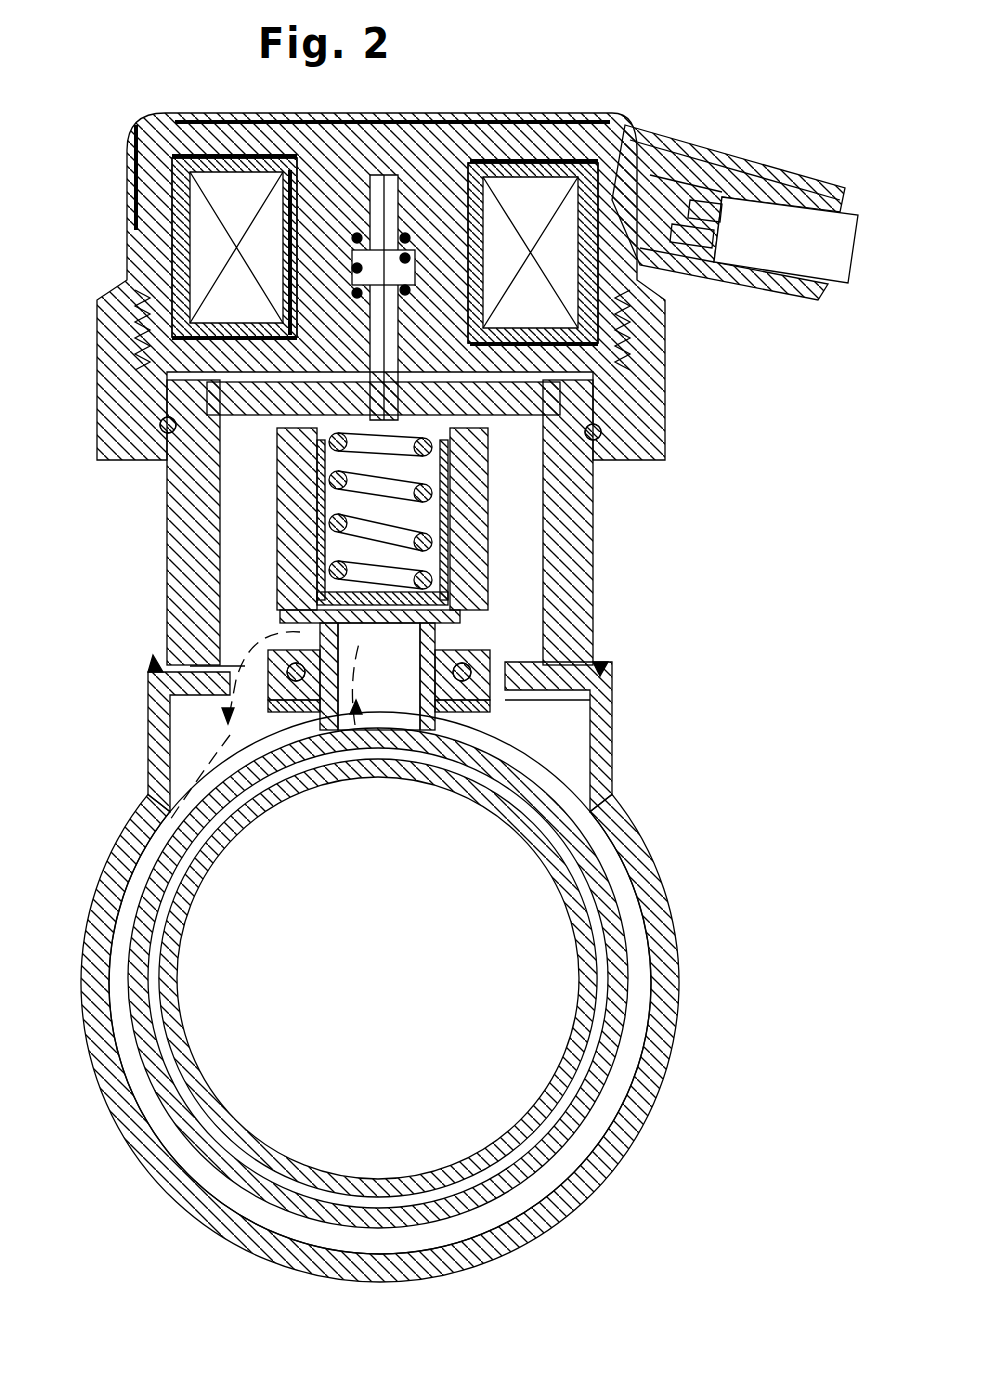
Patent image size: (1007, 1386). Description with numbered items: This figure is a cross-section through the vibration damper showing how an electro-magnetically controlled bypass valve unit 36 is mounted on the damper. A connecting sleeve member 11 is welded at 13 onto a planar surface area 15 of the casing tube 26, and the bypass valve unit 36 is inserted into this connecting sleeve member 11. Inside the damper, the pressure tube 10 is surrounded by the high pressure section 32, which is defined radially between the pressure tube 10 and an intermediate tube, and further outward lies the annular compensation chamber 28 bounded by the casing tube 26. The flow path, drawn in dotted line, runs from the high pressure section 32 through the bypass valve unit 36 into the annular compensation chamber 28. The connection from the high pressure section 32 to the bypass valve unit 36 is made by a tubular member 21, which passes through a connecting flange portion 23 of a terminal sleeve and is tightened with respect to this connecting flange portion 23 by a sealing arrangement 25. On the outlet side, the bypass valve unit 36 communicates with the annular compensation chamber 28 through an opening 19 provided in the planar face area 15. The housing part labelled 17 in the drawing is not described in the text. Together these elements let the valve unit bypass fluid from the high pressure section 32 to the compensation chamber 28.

The bypass valve unit 36 is at (634, 92).
The connecting sleeve member 11 is at (580, 517).
The planar surface area 15 is at (590, 634).
The weld 13 is at (604, 666).
The opening 19 is at (525, 700).
The sealing arrangement 25 is at (263, 642).
The housing 17 is at (200, 765).
The connecting flange portion 23 is at (300, 716).
The tubular member 21 is at (415, 722).
The pressure tube 10 is at (587, 934).
The high pressure section 32 is at (609, 982).
The annular compensation chamber 28 is at (628, 1068).
The casing tube 26 is at (628, 1141).